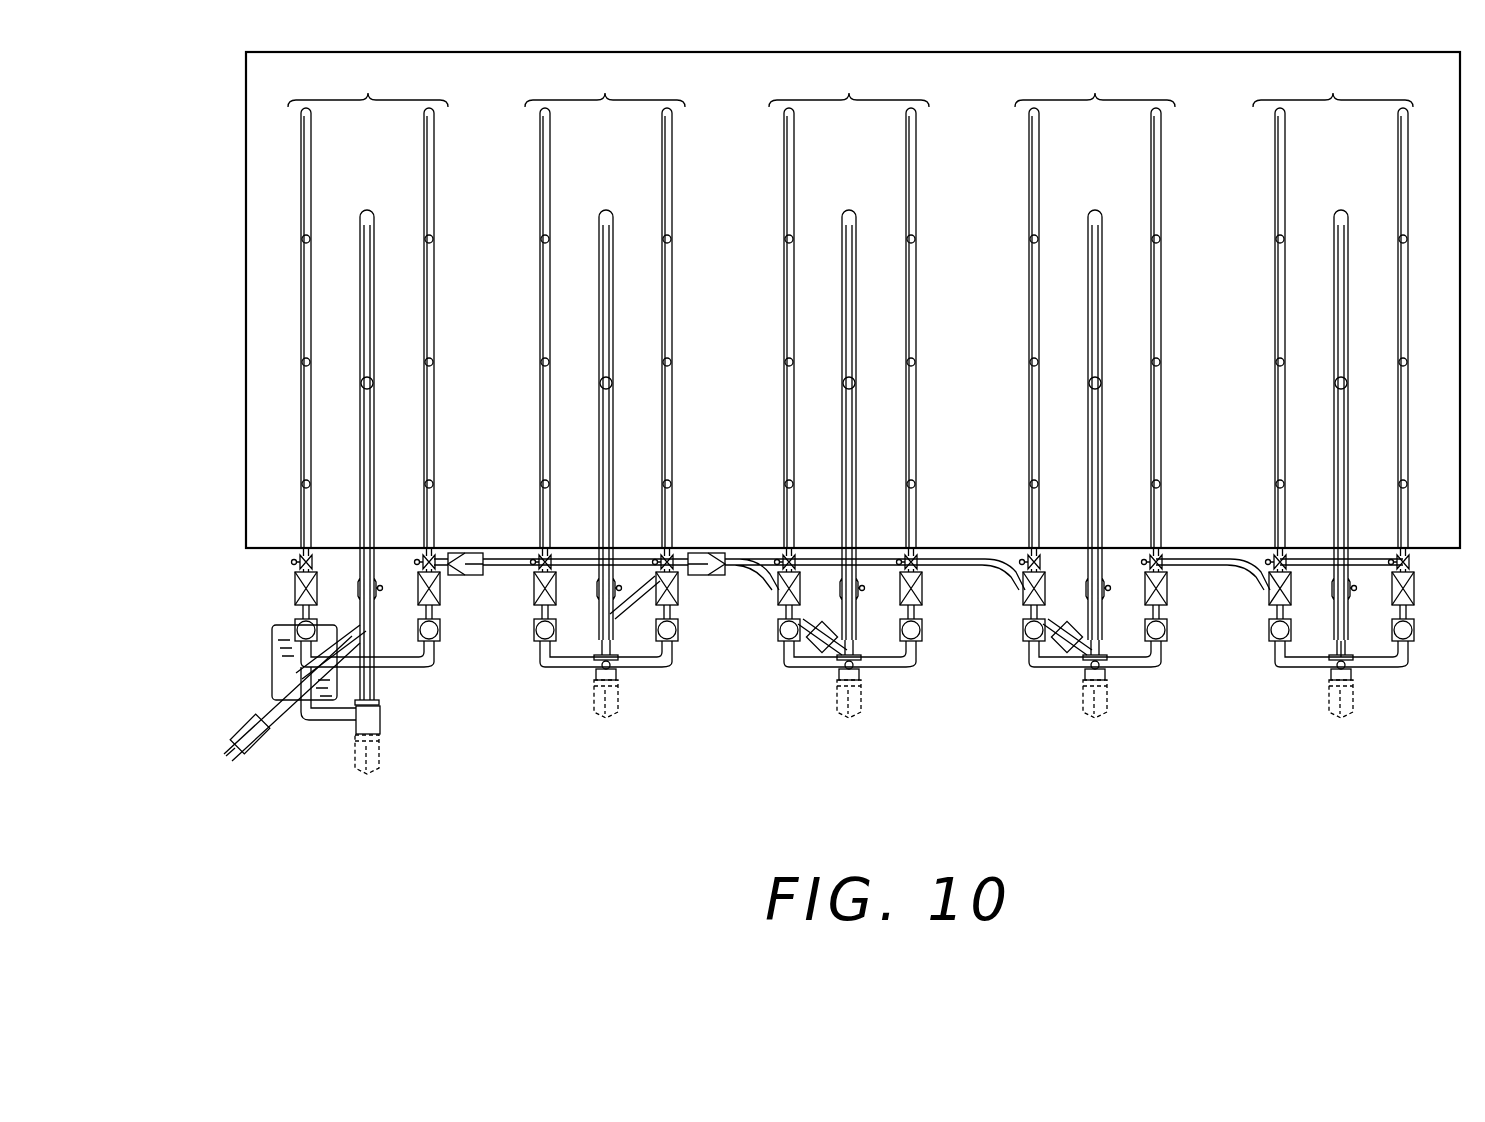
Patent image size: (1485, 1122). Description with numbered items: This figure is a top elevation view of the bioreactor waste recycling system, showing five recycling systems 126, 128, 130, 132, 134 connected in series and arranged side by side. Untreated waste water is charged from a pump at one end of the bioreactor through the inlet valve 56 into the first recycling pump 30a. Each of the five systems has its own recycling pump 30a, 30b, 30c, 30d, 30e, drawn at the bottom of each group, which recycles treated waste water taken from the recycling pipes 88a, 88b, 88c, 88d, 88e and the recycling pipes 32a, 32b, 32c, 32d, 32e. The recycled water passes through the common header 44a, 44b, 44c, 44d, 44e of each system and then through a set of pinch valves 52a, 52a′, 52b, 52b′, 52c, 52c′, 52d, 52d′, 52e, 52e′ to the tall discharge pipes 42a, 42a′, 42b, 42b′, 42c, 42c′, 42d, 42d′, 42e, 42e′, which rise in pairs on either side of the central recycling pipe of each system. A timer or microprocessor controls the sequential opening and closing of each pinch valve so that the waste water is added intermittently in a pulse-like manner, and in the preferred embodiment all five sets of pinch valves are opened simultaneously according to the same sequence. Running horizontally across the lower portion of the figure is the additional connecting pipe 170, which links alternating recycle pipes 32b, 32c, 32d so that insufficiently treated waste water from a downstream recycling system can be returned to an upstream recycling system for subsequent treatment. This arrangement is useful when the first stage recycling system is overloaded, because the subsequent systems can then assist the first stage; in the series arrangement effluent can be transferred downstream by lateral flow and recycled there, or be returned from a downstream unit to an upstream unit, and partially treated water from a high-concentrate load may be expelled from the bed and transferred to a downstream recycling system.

The recycling system 126 is at (368, 84).
The recycling system 128 is at (605, 84).
The recycling system 130 is at (849, 84).
The recycling system 132 is at (1095, 84).
The recycling system 134 is at (1333, 84).
The discharge pipe 42a is at (311, 165).
The discharge pipe 42a′ is at (434, 165).
The discharge pipe 42b is at (550, 177).
The discharge pipe 42b′ is at (672, 200).
The discharge pipe 42c is at (794, 187).
The discharge pipe 42c′ is at (916, 177).
The discharge pipe 42d is at (1039, 177).
The discharge pipe 42d′ is at (1161, 174).
The discharge pipe 42e is at (1286, 177).
The discharge pipe 42e′ is at (1408, 160).
The recycling pipe 88a is at (374, 314).
The recycling pipe 88b is at (613, 328).
The recycling pipe 88c is at (856, 328).
The recycling pipe 88d is at (1102, 312).
The recycling pipe 88e is at (1348, 318).
The pinch valve 52a is at (294, 628).
The pinch valve 52a′ is at (440, 630).
The pinch valve 52b is at (534, 630).
The pinch valve 52b′ is at (678, 630).
The pinch valve 52c is at (778, 630).
The pinch valve 52c′ is at (921, 630).
The pinch valve 52d is at (1023, 630).
The pinch valve 52d′ is at (1166, 630).
The pinch valve 52e is at (1268, 630).
The pinch valve 52e′ is at (1412, 630).
The recycling pipe 32a is at (376, 630).
The recycling pipe 32b is at (613, 630).
The recycling pipe 32c is at (856, 630).
The recycling pipe 32d is at (1102, 630).
The recycling pipe 32e is at (1410, 660).
The common header 44a is at (398, 668).
The common header 44b is at (640, 668).
The common header 44c is at (878, 668).
The common header 44d is at (1125, 668).
The common header 44e is at (1362, 668).
The recycling pump 30a is at (382, 772).
The recycling pump 30b is at (618, 714).
The recycling pump 30c is at (862, 714).
The recycling pump 30d is at (1106, 714).
The recycling pump 30e is at (1352, 714).
The connecting pipe 170 is at (547, 556).
The inlet valve 56 is at (240, 730).